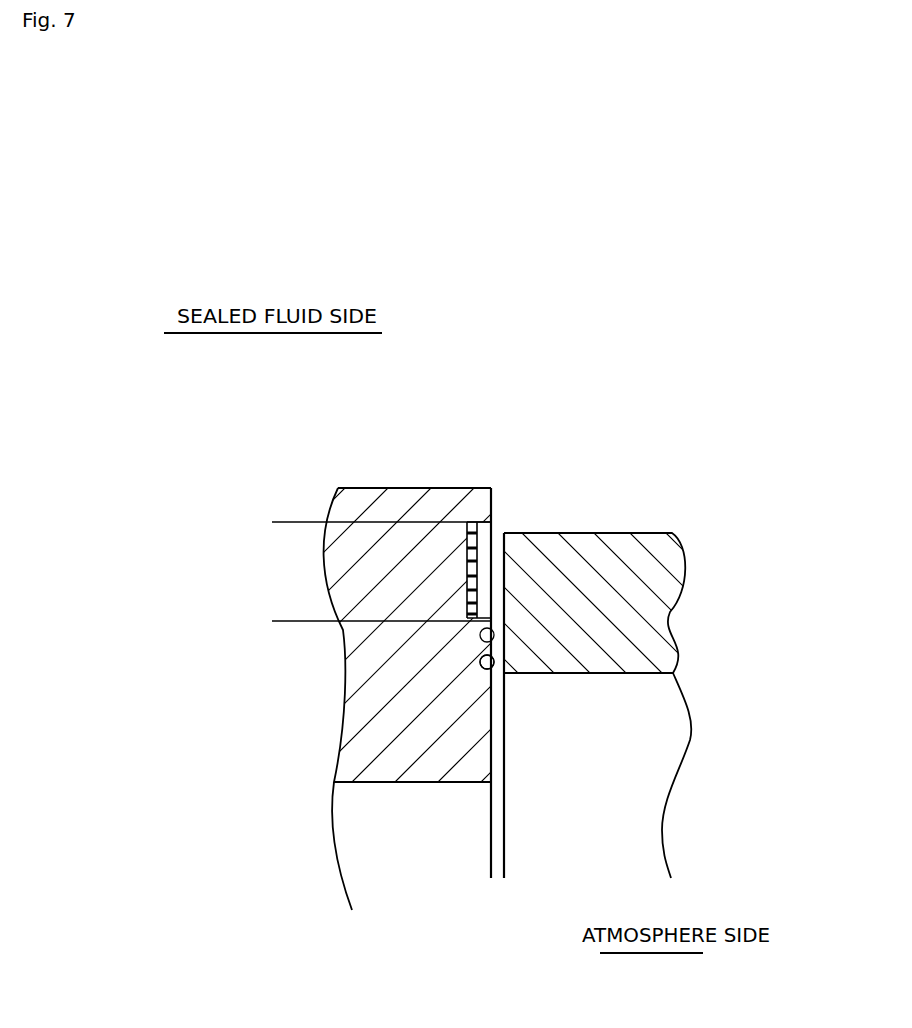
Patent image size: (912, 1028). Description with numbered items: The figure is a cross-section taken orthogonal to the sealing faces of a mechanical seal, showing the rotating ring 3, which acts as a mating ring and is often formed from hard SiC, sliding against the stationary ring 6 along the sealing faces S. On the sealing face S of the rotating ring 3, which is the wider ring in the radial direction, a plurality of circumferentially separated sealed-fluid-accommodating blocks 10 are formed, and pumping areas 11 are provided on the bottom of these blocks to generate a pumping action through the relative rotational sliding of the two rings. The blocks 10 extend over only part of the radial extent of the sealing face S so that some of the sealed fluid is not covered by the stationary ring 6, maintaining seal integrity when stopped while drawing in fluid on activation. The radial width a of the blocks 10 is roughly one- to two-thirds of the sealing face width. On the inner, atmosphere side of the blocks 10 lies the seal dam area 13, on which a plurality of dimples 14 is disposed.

The rotating ring 3 is at (417, 488).
The stationary ring 6 is at (627, 533).
The sealing face S is at (492, 528).
The sealed-fluid-accommodating block 10 is at (480, 572).
The pumping area 11 is at (523, 533).
The seal dam area 13 is at (495, 655).
The dimple 14 is at (481, 648).
The width of the sealed-fluid-accommodating block in the radial direction a is at (280, 522).